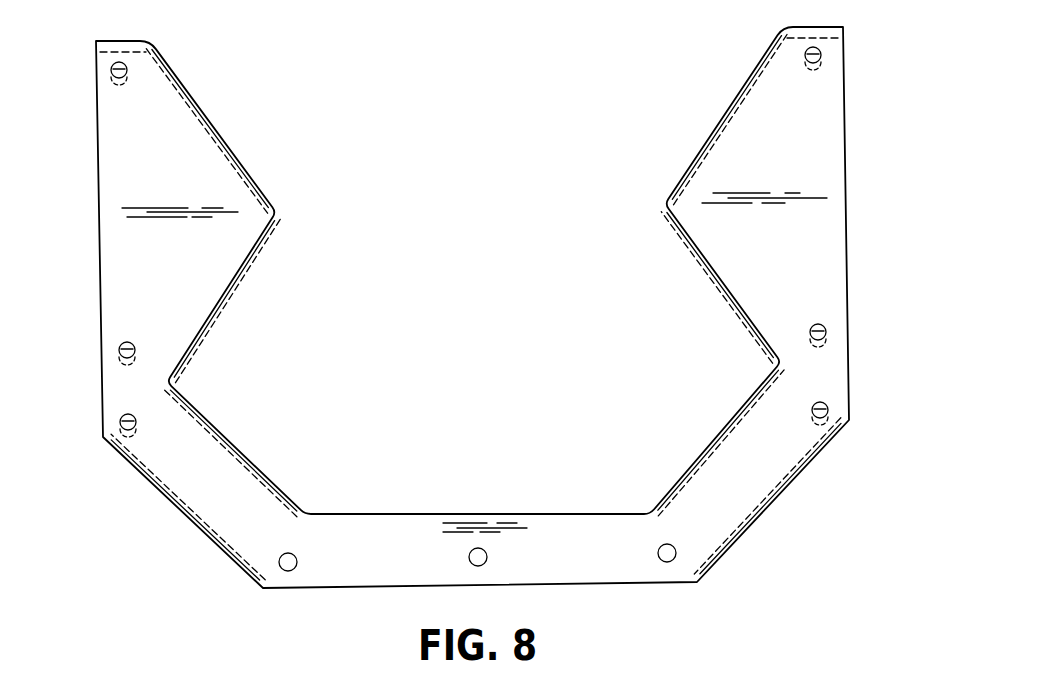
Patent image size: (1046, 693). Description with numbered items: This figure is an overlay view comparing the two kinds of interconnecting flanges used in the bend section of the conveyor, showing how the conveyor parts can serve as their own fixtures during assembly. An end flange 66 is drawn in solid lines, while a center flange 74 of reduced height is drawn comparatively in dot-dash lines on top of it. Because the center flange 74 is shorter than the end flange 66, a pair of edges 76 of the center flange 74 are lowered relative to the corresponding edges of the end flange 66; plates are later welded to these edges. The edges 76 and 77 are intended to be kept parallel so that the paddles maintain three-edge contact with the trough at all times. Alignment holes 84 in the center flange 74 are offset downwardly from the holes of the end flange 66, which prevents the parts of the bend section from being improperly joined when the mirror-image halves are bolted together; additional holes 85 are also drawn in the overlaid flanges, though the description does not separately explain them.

The end flange 66 is at (138, 277).
The center flange 74 is at (227, 135).
The edges of center flanges 76 is at (208, 330).
The edge 77 is at (250, 260).
The alignment holes 84 is at (132, 434).
The mounting hole 85 is at (127, 342).